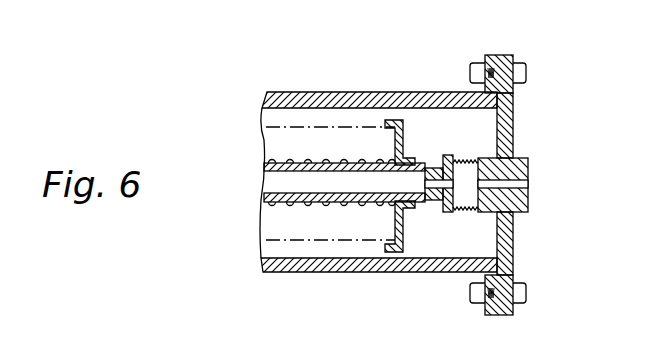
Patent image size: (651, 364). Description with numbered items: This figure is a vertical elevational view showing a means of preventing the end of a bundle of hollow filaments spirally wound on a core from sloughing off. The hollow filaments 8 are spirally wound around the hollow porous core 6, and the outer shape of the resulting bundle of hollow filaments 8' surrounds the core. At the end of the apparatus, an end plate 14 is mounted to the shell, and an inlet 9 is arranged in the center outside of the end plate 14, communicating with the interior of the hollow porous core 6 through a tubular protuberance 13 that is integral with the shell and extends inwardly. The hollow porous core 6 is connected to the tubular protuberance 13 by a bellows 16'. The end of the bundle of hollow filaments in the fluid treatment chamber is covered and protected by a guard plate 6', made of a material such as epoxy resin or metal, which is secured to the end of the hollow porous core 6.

The bundle of hollow filaments 8' is at (378, 154).
The hollow filaments 8 is at (344, 234).
The guard plate 6' is at (410, 150).
The hollow porous core 6 is at (439, 164).
The bellows 16' is at (452, 242).
The end plate 14 is at (513, 130).
The tubular protuberance 13 is at (513, 250).
The inlet 9 is at (528, 184).